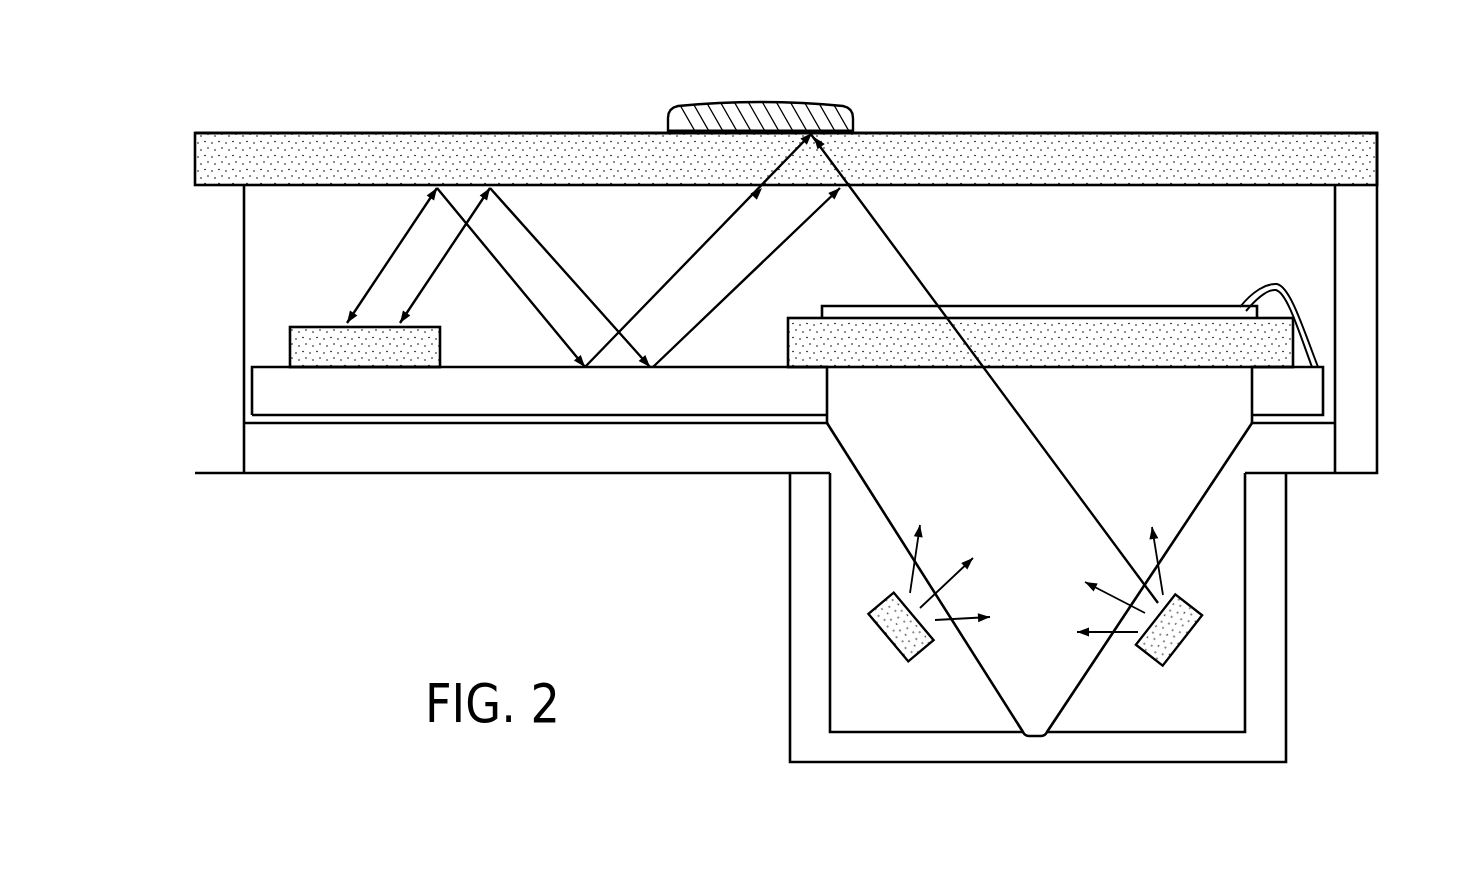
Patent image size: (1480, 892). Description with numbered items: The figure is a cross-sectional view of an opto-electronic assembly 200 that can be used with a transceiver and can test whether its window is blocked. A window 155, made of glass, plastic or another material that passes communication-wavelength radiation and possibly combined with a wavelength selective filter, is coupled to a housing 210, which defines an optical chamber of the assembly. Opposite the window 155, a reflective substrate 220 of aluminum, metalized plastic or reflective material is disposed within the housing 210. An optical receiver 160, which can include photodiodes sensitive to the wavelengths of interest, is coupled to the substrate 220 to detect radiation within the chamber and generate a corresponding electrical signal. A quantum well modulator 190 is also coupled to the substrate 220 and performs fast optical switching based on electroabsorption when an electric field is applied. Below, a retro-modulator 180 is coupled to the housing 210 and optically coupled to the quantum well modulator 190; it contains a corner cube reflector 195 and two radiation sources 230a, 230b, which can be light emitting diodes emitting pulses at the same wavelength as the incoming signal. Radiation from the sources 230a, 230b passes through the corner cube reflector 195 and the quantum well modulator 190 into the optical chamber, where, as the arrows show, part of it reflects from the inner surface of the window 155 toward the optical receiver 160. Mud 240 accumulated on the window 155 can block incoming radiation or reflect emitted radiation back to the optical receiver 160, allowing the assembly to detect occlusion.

The opto-electronic assembly 200 is at (783, 426).
The window 155 is at (1342, 132).
The housing 210 is at (1368, 248).
The mud 240 is at (772, 100).
The optical receiver 160 is at (292, 348).
The substrate 220 is at (268, 397).
The quantum well modulator 190 is at (1147, 306).
The corner cube reflector 195 is at (893, 533).
The retro-modulator 180 is at (1180, 760).
The radiation source 230a is at (1196, 612).
The radiation source 230b is at (870, 620).